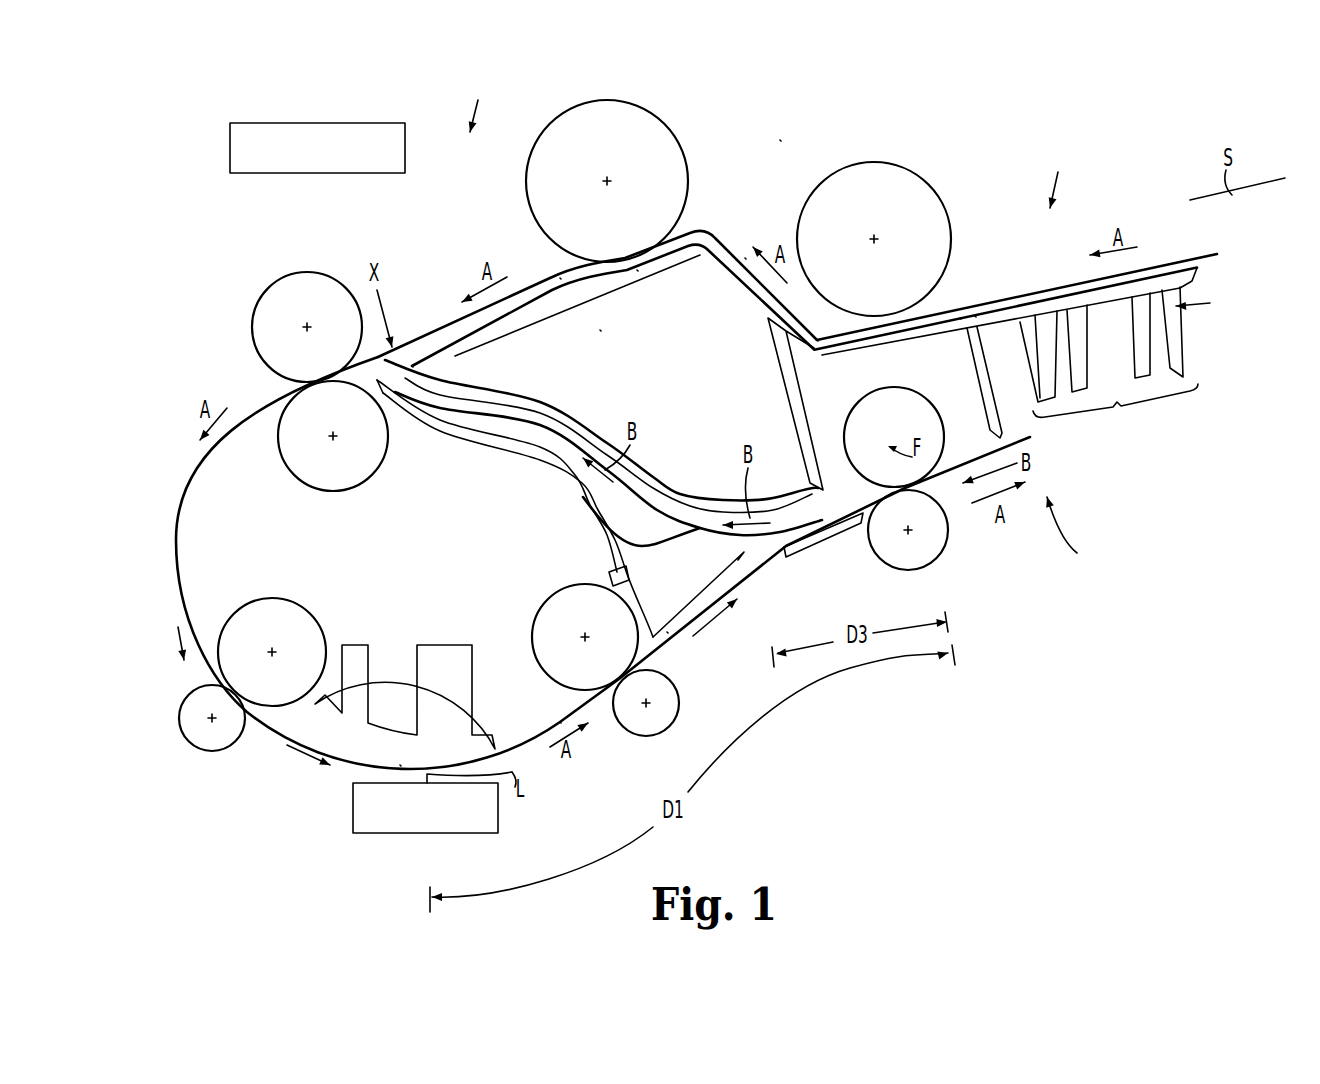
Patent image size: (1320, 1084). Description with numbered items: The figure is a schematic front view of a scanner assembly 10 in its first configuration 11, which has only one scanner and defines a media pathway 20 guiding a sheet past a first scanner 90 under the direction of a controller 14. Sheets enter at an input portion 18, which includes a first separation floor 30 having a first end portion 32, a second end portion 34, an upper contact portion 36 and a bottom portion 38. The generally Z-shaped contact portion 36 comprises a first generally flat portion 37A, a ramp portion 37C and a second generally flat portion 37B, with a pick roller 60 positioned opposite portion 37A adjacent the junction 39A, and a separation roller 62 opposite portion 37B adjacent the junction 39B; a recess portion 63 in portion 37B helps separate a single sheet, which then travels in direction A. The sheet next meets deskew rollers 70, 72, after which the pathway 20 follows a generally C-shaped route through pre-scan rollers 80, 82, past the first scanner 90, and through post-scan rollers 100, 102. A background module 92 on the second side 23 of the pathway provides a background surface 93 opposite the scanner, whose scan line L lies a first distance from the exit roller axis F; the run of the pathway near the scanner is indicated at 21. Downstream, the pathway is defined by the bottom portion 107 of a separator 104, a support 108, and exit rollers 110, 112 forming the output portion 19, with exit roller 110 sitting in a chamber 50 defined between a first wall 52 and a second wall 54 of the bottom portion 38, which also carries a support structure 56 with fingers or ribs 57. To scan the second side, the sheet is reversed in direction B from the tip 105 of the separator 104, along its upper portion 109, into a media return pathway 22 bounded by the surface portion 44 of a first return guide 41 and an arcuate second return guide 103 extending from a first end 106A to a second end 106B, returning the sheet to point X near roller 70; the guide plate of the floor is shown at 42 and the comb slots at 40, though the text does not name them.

The scanner assembly 10 is at (478, 102).
The first configuration 11 is at (780, 123).
The controller 14 is at (336, 124).
The input portion 18 is at (1055, 175).
The output portion 19 is at (1074, 539).
The media pathway 20 is at (438, 318).
The belt run 21 is at (352, 765).
The media return pathway 22 is at (496, 398).
The second side 23 is at (532, 742).
The first separation floor 30 is at (1209, 296).
The first end portion 32 is at (1192, 276).
The second end portion 34 is at (412, 355).
The upper contact portion 36 is at (995, 315).
The first generally flat portion 37A is at (965, 312).
The second generally flat portion 37B is at (553, 275).
The ramp portion 37C is at (743, 262).
The bottom portion 38 is at (1005, 328).
The junction 39A is at (815, 352).
The junction 39B is at (708, 258).
The slot 40 is at (1094, 306).
The first return guide 41 is at (646, 357).
The plate 42 is at (580, 298).
The surface portion 44 is at (573, 428).
The chamber 50 is at (1001, 333).
The first wall 52 is at (783, 378).
The second wall 54 is at (972, 383).
The support structure 56 is at (1115, 411).
The fingers or ribs 57 is at (1186, 372).
The pick roller 60 is at (890, 175).
The separation roller 62 is at (670, 148).
The recess portion 63 is at (640, 272).
The deskew roller 70 is at (345, 478).
The deskew roller 72 is at (307, 302).
The pre-scan roller 80 is at (300, 620).
The pre-scan roller 82 is at (210, 745).
The first scanner 90 is at (352, 824).
The background module 92 is at (450, 640).
The background surface 93 is at (398, 757).
The post-scan roller 100 is at (545, 632).
The post-scan roller 102 is at (662, 725).
The second return guide 103 is at (538, 462).
The separator 104 is at (698, 594).
The tip 105 is at (738, 568).
The first end 106A is at (609, 572).
The second end 106B is at (410, 418).
The bottom portion 107 is at (667, 604).
The support 108 is at (845, 548).
The upper portion 109 is at (590, 530).
The exit roller 110 is at (894, 437).
The exit roller 112 is at (935, 548).